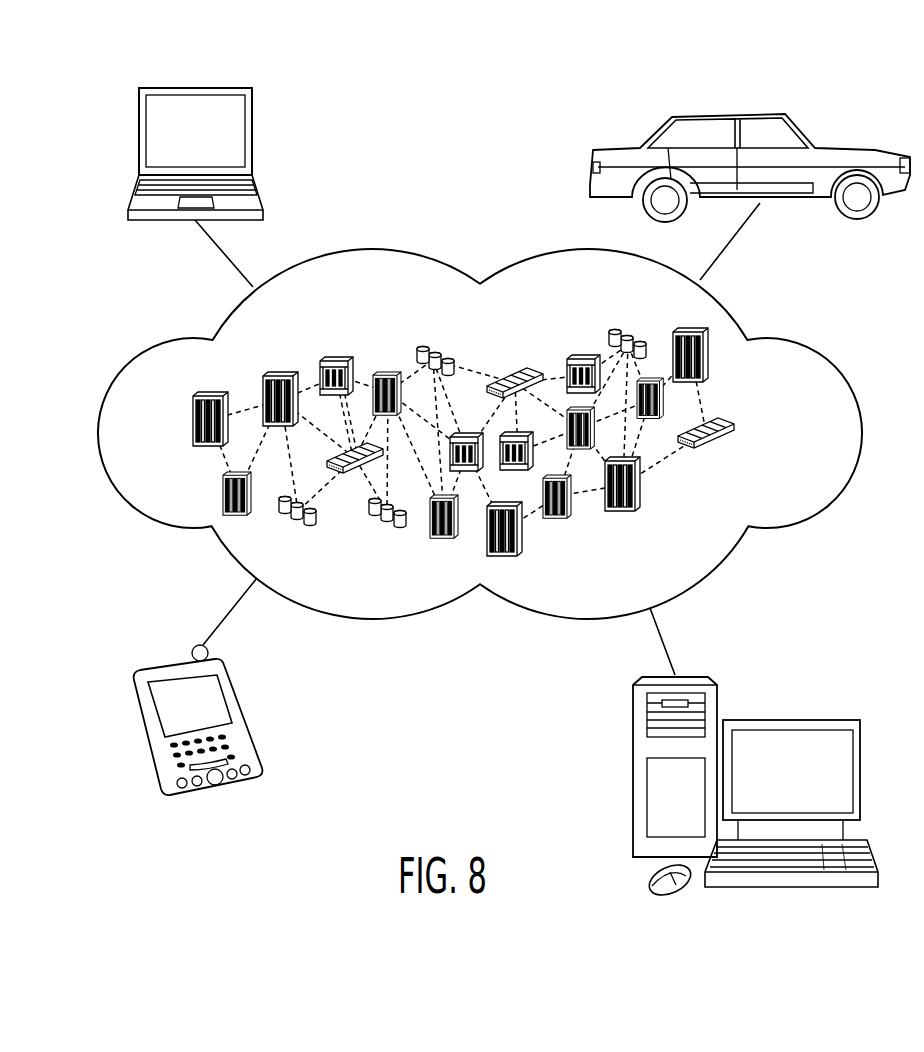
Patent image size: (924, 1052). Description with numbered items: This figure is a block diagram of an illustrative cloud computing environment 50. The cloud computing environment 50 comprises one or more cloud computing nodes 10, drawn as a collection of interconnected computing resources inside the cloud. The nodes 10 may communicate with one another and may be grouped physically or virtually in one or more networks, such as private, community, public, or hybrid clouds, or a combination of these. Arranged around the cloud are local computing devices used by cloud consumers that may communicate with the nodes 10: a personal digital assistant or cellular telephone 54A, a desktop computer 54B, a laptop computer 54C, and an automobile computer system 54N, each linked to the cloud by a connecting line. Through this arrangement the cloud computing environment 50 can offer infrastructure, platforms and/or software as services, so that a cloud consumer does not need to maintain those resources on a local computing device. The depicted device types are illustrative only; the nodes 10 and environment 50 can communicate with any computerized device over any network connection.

The cloud computing node 10 is at (742, 431).
The cloud computing environment 50 is at (805, 340).
The personal digital assistant (PDA) or cellular telephone 54A is at (175, 660).
The desktop computer 54B is at (792, 720).
The laptop computer 54C is at (197, 88).
The automobile computer system 54N is at (730, 112).